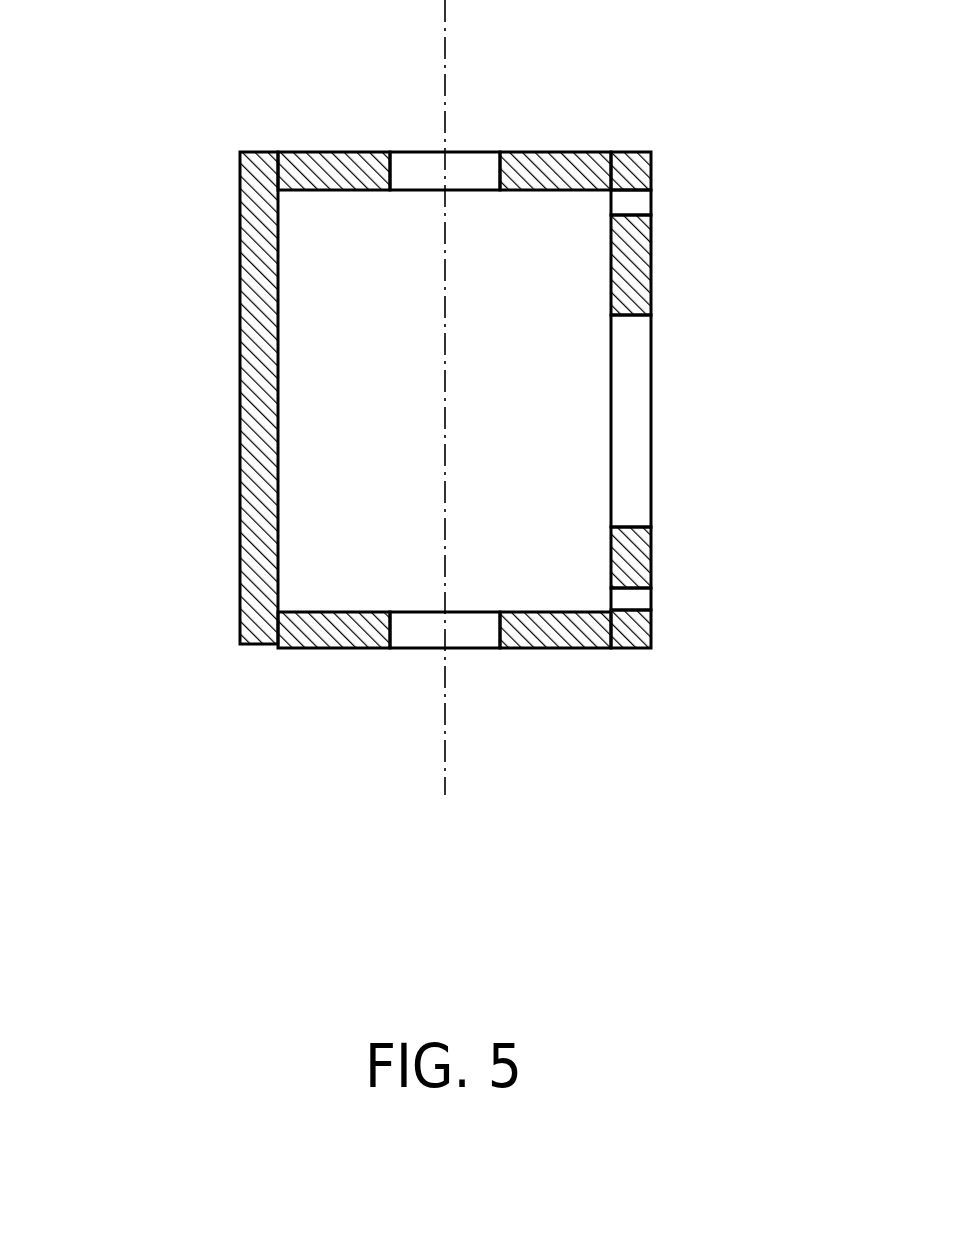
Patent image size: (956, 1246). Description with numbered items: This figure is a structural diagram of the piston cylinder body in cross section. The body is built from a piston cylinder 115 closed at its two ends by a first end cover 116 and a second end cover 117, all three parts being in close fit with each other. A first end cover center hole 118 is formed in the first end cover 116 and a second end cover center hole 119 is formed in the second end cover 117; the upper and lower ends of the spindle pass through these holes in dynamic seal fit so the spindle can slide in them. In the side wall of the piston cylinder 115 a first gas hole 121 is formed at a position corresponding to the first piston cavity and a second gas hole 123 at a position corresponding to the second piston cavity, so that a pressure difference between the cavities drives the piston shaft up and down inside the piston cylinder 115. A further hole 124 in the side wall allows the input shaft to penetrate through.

The piston cylinder 115 is at (258, 353).
The first end cover 116 is at (358, 163).
The second end cover 117 is at (347, 631).
The first end cover center hole 118 is at (470, 170).
The second end cover center hole 119 is at (478, 637).
The first gas hole 121 is at (630, 202).
The second gas hole 123 is at (627, 598).
The hole 124 is at (628, 445).